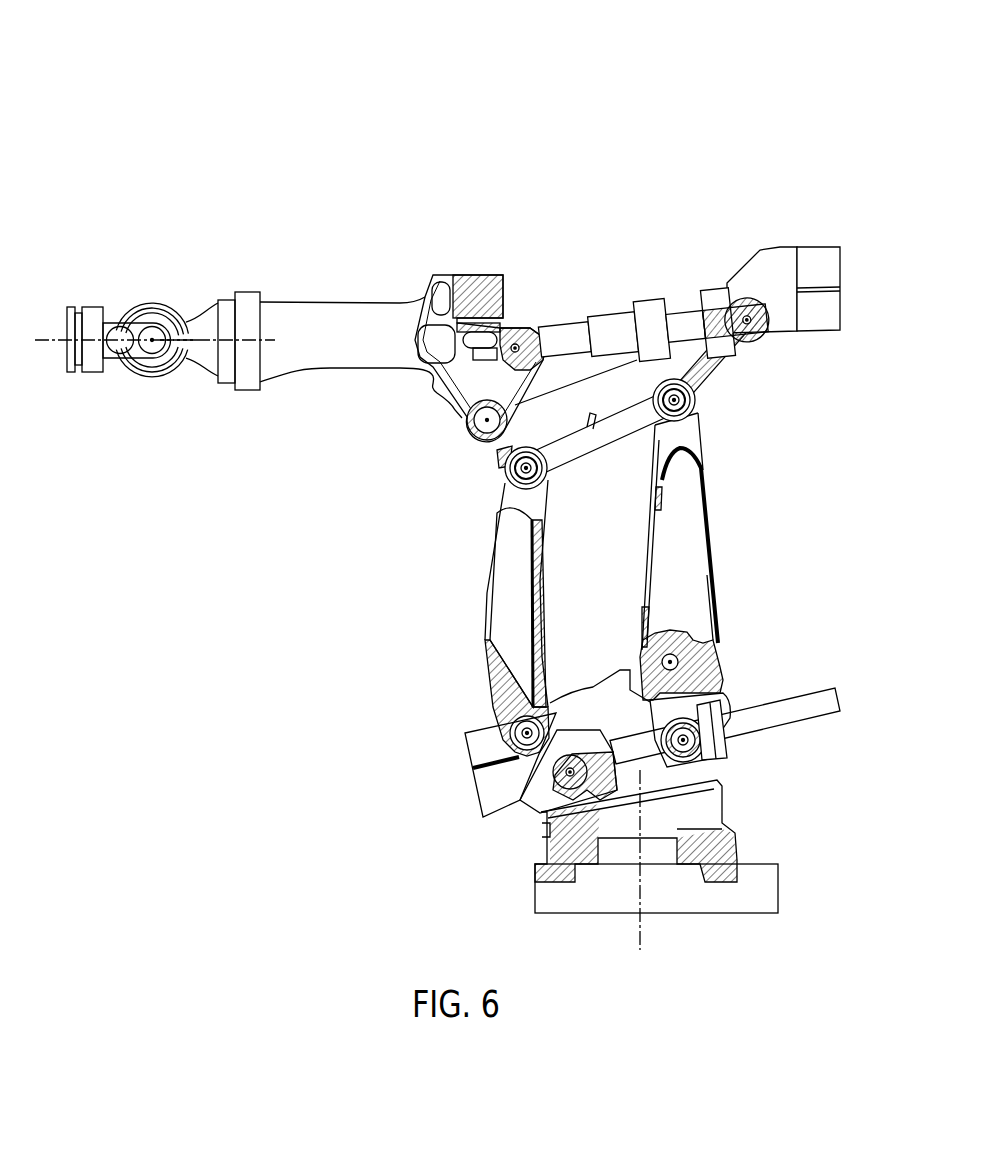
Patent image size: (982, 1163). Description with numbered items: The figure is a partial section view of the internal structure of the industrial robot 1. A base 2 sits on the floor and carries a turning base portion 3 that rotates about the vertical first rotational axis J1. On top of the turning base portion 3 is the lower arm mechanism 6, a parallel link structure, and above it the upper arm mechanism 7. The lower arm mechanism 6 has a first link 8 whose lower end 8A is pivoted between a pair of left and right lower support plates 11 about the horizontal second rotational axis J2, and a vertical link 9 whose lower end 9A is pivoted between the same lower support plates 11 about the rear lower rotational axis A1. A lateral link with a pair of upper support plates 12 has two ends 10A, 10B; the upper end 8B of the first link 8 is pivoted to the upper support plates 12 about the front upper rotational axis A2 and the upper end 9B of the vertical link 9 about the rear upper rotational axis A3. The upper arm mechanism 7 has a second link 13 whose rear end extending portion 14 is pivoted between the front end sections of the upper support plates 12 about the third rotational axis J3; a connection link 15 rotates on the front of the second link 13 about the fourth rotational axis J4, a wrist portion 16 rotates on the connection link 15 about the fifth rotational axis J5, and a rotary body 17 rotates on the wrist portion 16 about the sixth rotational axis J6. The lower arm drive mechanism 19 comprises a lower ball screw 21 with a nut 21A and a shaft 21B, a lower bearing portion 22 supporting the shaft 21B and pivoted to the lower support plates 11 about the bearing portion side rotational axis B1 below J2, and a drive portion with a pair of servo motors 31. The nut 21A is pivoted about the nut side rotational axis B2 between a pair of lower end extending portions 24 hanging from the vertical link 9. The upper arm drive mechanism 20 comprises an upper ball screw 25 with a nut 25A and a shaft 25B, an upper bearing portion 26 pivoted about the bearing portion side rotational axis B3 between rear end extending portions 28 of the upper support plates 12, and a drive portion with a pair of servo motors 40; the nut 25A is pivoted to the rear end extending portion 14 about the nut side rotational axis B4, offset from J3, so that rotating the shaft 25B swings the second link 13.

The industrial robot 1 is at (411, 118).
The base 2 is at (778, 890).
The turning base portion 3 is at (712, 857).
The lower arm mechanism 6 is at (342, 612).
The upper arm mechanism 7 is at (322, 243).
The first link 8 is at (497, 610).
The lower end of first link 8A is at (505, 740).
The upper end of first link 8B is at (503, 492).
The vertical link 9 is at (704, 556).
The lower end of vertical link 9A is at (695, 648).
The upper end of vertical link 9B is at (697, 428).
The end of lateral link 10A is at (504, 459).
The end of lateral link 10B is at (700, 398).
The lower support plates 11 is at (595, 695).
The upper support plates 12 is at (615, 428).
The second link 13 is at (325, 358).
The rear end extending portion 14 is at (528, 393).
The connection link 15 is at (210, 355).
The wrist portion 16 is at (133, 378).
The rotary body 17 is at (71, 372).
The lower arm drive mechanism 19 is at (412, 803).
The upper arm drive mechanism 20 is at (732, 198).
The lower ball screw 21 is at (838, 737).
The nut 21A is at (752, 762).
The shaft 21B is at (770, 722).
The lower bearing portion 22 is at (552, 752).
The lower end extending portions 24 is at (712, 693).
The upper ball screw 25 is at (548, 197).
The nut 25A is at (614, 314).
The shaft 25B is at (668, 305).
The upper bearing portion 26 is at (758, 272).
The rear end extending portion 28 is at (745, 370).
The servo motors 31 is at (522, 780).
The servo motors 40 is at (840, 288).
The rear lower rotational axis A1 is at (672, 662).
The front upper rotational axis A2 is at (524, 470).
The rear upper rotational axis A3 is at (690, 402).
The bearing portion side rotational axis B1 is at (555, 800).
The nut side rotational axis B2 is at (700, 750).
The bearing portion side rotational axis B3 is at (740, 305).
The nut side rotational axis B4 is at (518, 347).
The first rotational axis J1 is at (645, 932).
The second rotational axis J2 is at (520, 732).
The third rotational axis J3 is at (486, 420).
The fourth rotational axis J4 is at (196, 340).
The fifth rotational axis J5 is at (150, 340).
The sixth rotational axis J6 is at (52, 338).